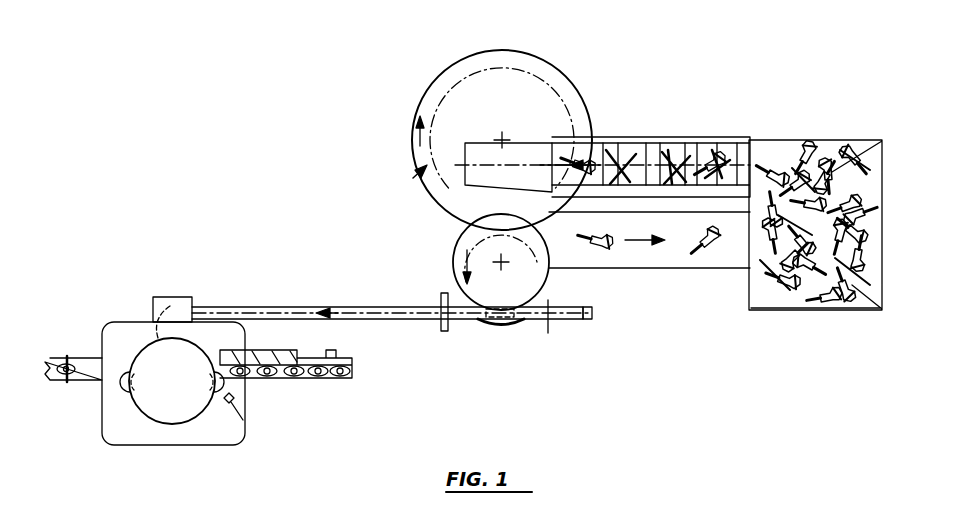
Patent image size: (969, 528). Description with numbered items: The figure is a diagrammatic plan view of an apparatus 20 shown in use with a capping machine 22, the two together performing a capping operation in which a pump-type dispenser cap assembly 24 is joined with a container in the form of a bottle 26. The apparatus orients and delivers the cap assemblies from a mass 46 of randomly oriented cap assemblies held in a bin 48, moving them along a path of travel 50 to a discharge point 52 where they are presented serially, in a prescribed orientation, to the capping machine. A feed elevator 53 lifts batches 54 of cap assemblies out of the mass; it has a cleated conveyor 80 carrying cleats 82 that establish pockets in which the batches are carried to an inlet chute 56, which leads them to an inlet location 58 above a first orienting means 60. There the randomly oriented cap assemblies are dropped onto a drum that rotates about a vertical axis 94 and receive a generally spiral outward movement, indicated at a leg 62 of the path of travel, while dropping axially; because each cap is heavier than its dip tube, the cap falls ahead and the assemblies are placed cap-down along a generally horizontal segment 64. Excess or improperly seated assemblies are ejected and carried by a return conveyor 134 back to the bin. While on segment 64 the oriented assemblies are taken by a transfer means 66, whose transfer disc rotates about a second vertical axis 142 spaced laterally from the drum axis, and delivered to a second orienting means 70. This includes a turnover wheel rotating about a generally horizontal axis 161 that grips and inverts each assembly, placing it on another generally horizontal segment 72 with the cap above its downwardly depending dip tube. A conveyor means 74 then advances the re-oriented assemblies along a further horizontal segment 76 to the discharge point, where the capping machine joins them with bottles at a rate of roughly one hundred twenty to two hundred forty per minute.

The apparatus 20 is at (543, 55).
The capping machine 22 is at (131, 448).
The pump-type dispenser cap assembly 24 is at (67, 360).
The bottle 26 is at (72, 380).
The mass of randomly oriented cap assemblies 46 is at (830, 150).
The bin 48 is at (806, 312).
The path of travel 50 is at (721, 150).
The discharge point 52 is at (192, 296).
The feed elevator 53 is at (625, 146).
The batches of cap assemblies 54 is at (614, 146).
The inlet chute 56 is at (492, 192).
The inlet location 58 is at (478, 150).
The first orienting means 60 is at (414, 183).
The leg of path of travel 62 is at (450, 90).
The horizontal segment of path of travel 64 is at (502, 228).
The transfer means 66 is at (552, 270).
The second orienting means 70 is at (576, 322).
The horizontal segment of path of travel 72 is at (504, 322).
The conveyor means 74 is at (307, 306).
The further segment of path of travel 76 is at (442, 331).
The cleated conveyor 80 is at (672, 150).
The cleats 82 is at (636, 152).
The vertical axis 94 is at (504, 140).
The return conveyor 134 is at (698, 256).
The vertical axis 142 is at (504, 268).
The horizontal axis 161 is at (549, 332).